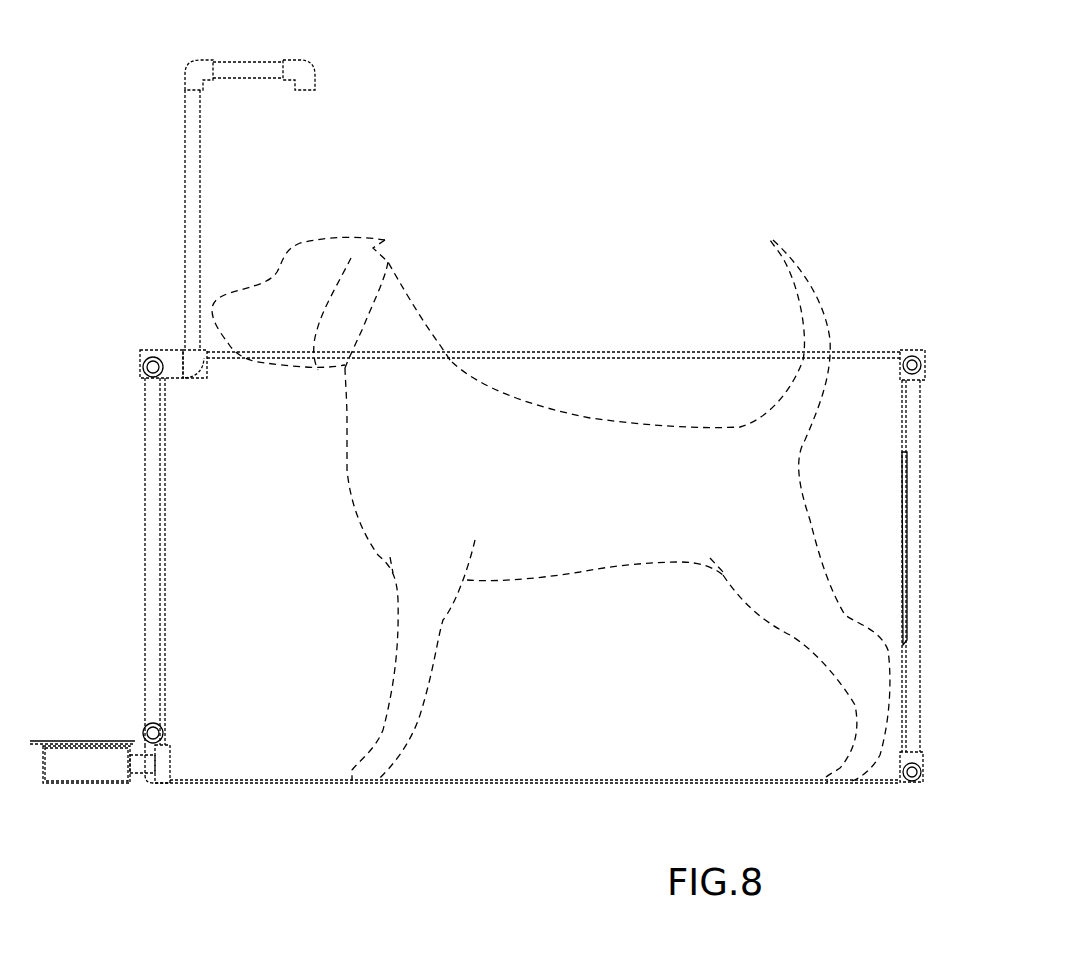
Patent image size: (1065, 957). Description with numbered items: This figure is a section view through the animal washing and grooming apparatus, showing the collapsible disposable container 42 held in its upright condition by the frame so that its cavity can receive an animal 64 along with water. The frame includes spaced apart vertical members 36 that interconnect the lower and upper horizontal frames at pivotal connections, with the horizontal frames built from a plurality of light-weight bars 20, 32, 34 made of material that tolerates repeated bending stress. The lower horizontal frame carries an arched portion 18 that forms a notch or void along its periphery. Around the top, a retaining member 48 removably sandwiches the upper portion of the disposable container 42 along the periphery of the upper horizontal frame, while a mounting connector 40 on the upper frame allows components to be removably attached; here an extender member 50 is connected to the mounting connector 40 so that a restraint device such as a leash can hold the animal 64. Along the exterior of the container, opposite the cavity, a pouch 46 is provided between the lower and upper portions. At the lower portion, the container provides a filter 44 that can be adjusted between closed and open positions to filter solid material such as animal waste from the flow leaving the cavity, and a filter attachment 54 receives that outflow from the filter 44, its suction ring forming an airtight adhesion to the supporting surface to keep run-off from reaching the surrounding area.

The arched portion 18 is at (150, 724).
The bar 20 is at (152, 384).
The bar 32 is at (912, 356).
The bar 34 is at (912, 782).
The vertical member 36 is at (901, 426).
The mounting connector 40 is at (170, 370).
The disposable container 42 is at (281, 781).
The filter 44 is at (172, 757).
The pouch 46 is at (903, 500).
The retaining member 48 is at (564, 352).
The extender member 50 is at (255, 68).
The filter attachment 54 is at (68, 784).
The animal 64 is at (386, 240).